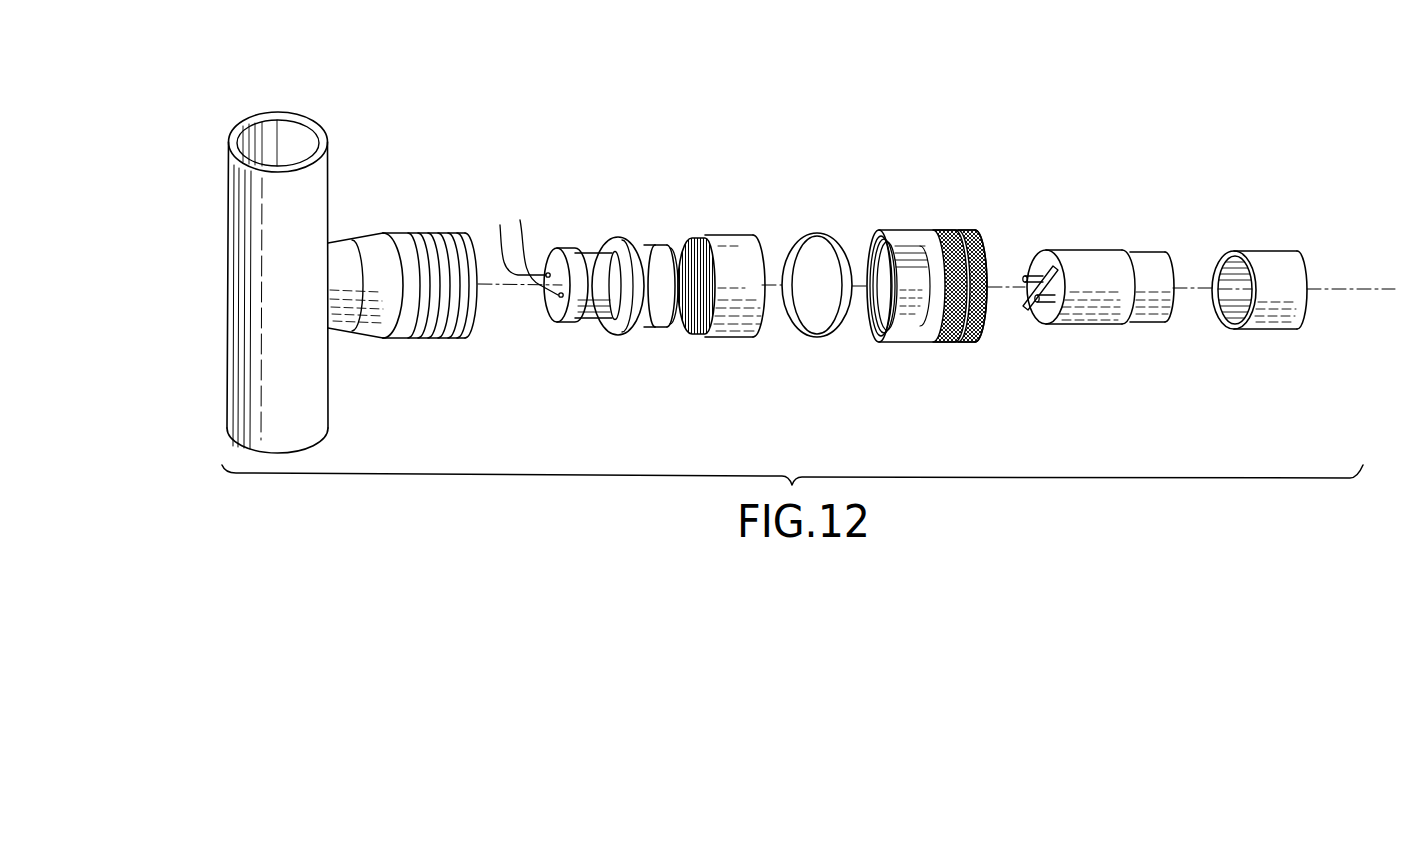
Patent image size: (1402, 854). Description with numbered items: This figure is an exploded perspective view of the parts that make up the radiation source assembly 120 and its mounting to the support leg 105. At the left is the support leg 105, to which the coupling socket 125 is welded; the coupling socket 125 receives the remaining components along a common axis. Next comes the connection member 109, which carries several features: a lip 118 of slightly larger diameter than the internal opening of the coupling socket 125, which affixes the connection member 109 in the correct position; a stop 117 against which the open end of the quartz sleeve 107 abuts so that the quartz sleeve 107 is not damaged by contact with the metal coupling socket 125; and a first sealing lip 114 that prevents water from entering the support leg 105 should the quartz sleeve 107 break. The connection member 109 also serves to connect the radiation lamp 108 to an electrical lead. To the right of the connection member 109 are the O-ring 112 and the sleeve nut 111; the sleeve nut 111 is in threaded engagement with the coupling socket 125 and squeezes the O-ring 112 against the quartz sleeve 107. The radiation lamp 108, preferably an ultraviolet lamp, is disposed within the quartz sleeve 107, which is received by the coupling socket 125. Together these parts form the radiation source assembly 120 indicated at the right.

The support leg 105 is at (297, 303).
The coupling socket 125 is at (392, 235).
The lip 118 is at (556, 322).
The stop 117 is at (620, 237).
The first sealing lip 114 is at (663, 242).
The connection member 109 is at (693, 316).
The O-ring 112 is at (813, 235).
The sleeve nut 111 is at (908, 232).
The radiation lamp 108 is at (1080, 262).
The quartz sleeve 107 is at (1274, 302).
The radiation source assembly 120 is at (1209, 228).